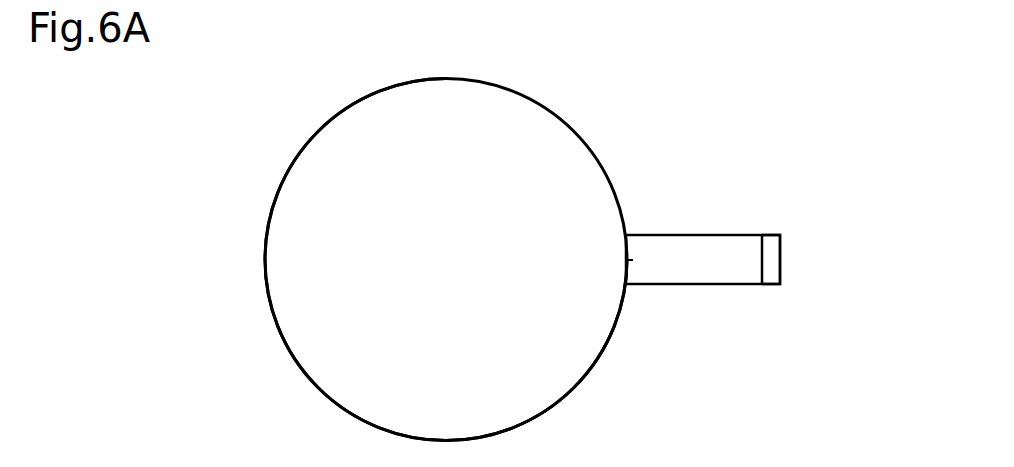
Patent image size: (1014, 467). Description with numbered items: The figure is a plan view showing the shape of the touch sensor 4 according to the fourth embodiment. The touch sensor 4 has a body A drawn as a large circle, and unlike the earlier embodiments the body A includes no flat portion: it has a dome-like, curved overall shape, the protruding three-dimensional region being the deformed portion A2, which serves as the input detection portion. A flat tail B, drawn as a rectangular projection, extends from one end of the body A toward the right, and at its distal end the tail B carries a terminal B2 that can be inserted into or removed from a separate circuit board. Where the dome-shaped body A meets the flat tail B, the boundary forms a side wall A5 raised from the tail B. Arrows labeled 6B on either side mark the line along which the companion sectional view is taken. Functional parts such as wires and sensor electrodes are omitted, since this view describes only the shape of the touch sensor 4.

The touch sensor 4 is at (650, 150).
The body A is at (319, 127).
The deformed portion A2 is at (545, 377).
The side wall A5 is at (627, 260).
The tail B is at (680, 285).
The terminal B2 is at (768, 285).
The section line 6B- 6B is at (256, 260).